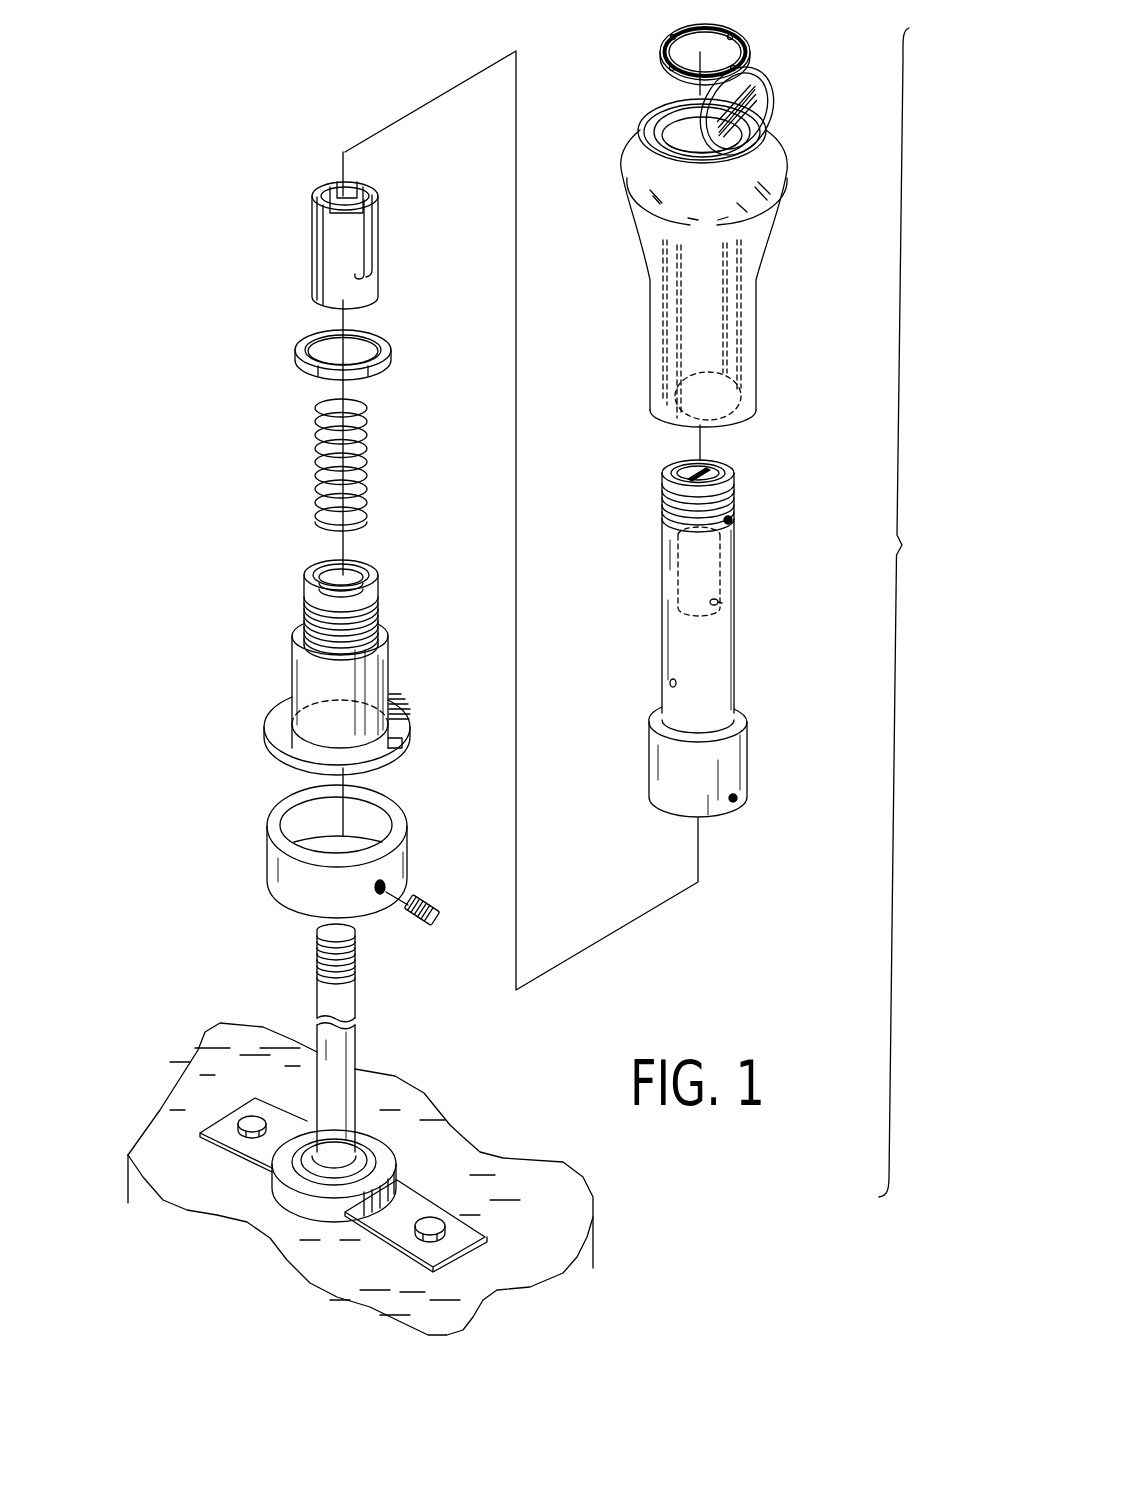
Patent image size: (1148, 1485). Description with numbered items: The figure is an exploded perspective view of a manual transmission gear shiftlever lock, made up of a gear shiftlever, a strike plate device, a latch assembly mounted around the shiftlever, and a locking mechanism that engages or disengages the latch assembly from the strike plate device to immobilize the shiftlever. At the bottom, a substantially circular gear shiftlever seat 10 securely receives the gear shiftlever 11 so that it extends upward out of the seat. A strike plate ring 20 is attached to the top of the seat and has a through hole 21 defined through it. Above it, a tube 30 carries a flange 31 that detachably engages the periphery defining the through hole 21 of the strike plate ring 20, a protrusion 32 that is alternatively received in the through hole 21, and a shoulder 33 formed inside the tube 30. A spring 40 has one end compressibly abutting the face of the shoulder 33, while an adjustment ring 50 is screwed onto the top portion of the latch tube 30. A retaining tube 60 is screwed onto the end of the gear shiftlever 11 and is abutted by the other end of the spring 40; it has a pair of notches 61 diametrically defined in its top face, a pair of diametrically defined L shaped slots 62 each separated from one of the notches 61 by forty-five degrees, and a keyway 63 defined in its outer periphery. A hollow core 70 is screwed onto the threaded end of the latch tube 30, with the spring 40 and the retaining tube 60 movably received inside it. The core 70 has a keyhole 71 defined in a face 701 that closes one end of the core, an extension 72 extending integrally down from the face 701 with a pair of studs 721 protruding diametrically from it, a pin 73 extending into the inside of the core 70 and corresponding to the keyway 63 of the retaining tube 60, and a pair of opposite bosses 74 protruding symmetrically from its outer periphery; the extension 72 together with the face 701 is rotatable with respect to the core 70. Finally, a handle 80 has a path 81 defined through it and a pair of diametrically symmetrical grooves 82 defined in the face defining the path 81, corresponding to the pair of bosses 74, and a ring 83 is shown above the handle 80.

The gear shiftlever seat 10 is at (397, 1153).
The gear shiftlever 11 is at (349, 1039).
The strike plate ring 20 is at (268, 869).
The through hole 21 is at (300, 808).
The tube 30 is at (298, 671).
The flange 31 is at (405, 714).
The protrusion 32 is at (412, 742).
The shoulder 33 is at (357, 570).
The spring 40 is at (316, 472).
The adjustment ring 50 is at (391, 352).
The retaining tube 60 is at (318, 190).
The notches 61 is at (378, 191).
The L shaped slots 62 is at (368, 254).
The keyway 63 is at (312, 255).
The hollow core 70 is at (728, 650).
The face 701 is at (667, 470).
The keyhole 71 is at (717, 458).
The extension 72 is at (707, 573).
The studs 721 is at (722, 603).
The pin 73 is at (667, 687).
The bosses 74 is at (733, 520).
The handle 80 is at (790, 150).
The path 81 is at (670, 138).
The grooves 82 is at (742, 327).
The retaining ring 83 is at (752, 42).